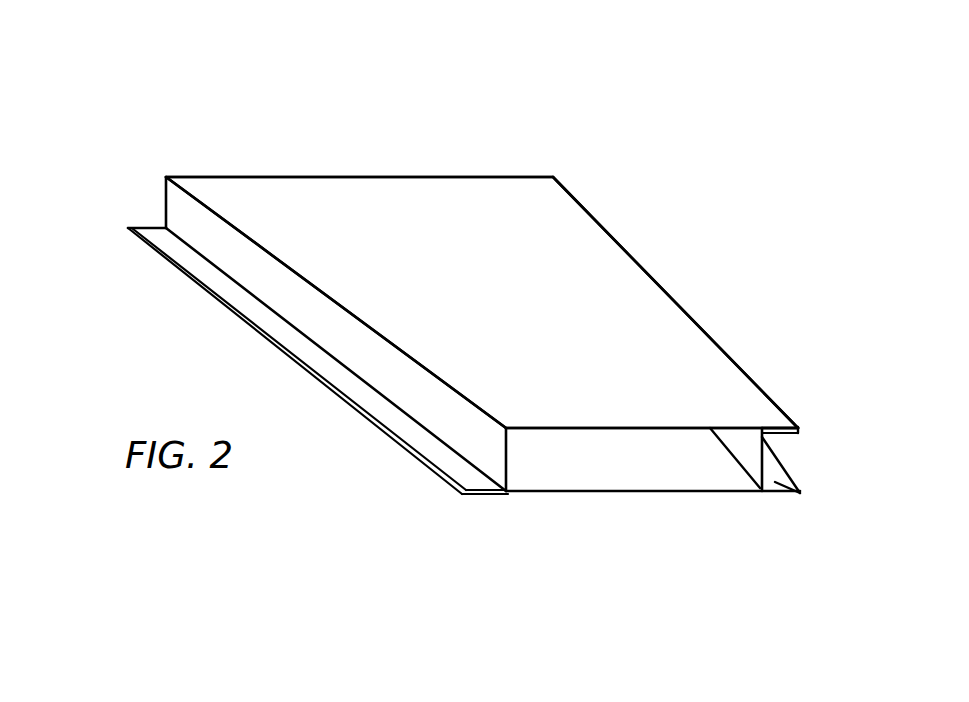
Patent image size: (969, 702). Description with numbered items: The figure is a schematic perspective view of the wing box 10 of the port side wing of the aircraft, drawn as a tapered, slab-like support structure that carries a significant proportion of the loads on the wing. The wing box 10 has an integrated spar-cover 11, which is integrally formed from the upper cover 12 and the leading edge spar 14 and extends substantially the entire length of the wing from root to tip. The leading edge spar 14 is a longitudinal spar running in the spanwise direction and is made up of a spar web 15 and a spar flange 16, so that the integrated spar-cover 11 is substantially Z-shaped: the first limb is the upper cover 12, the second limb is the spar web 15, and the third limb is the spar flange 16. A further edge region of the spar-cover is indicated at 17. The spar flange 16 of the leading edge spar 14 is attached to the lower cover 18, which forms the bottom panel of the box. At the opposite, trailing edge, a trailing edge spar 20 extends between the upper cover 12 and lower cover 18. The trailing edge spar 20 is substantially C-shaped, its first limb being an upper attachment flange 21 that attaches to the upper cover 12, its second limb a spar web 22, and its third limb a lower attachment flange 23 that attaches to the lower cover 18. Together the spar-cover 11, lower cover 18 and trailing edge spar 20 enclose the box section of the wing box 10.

The wing box 10 is at (656, 174).
The integrated spar-cover 11 is at (295, 213).
The upper cover 12 is at (393, 205).
The leading edge spar 14 is at (177, 203).
The spar web 15 is at (183, 223).
The spar flange 16 is at (150, 237).
The top corner edge 17 is at (190, 190).
The lower cover 18 is at (655, 472).
The trailing edge spar 20 is at (750, 457).
The upper attachment flange 21 is at (793, 427).
The spar web 22 is at (745, 447).
The lower attachment flange 23 is at (800, 493).